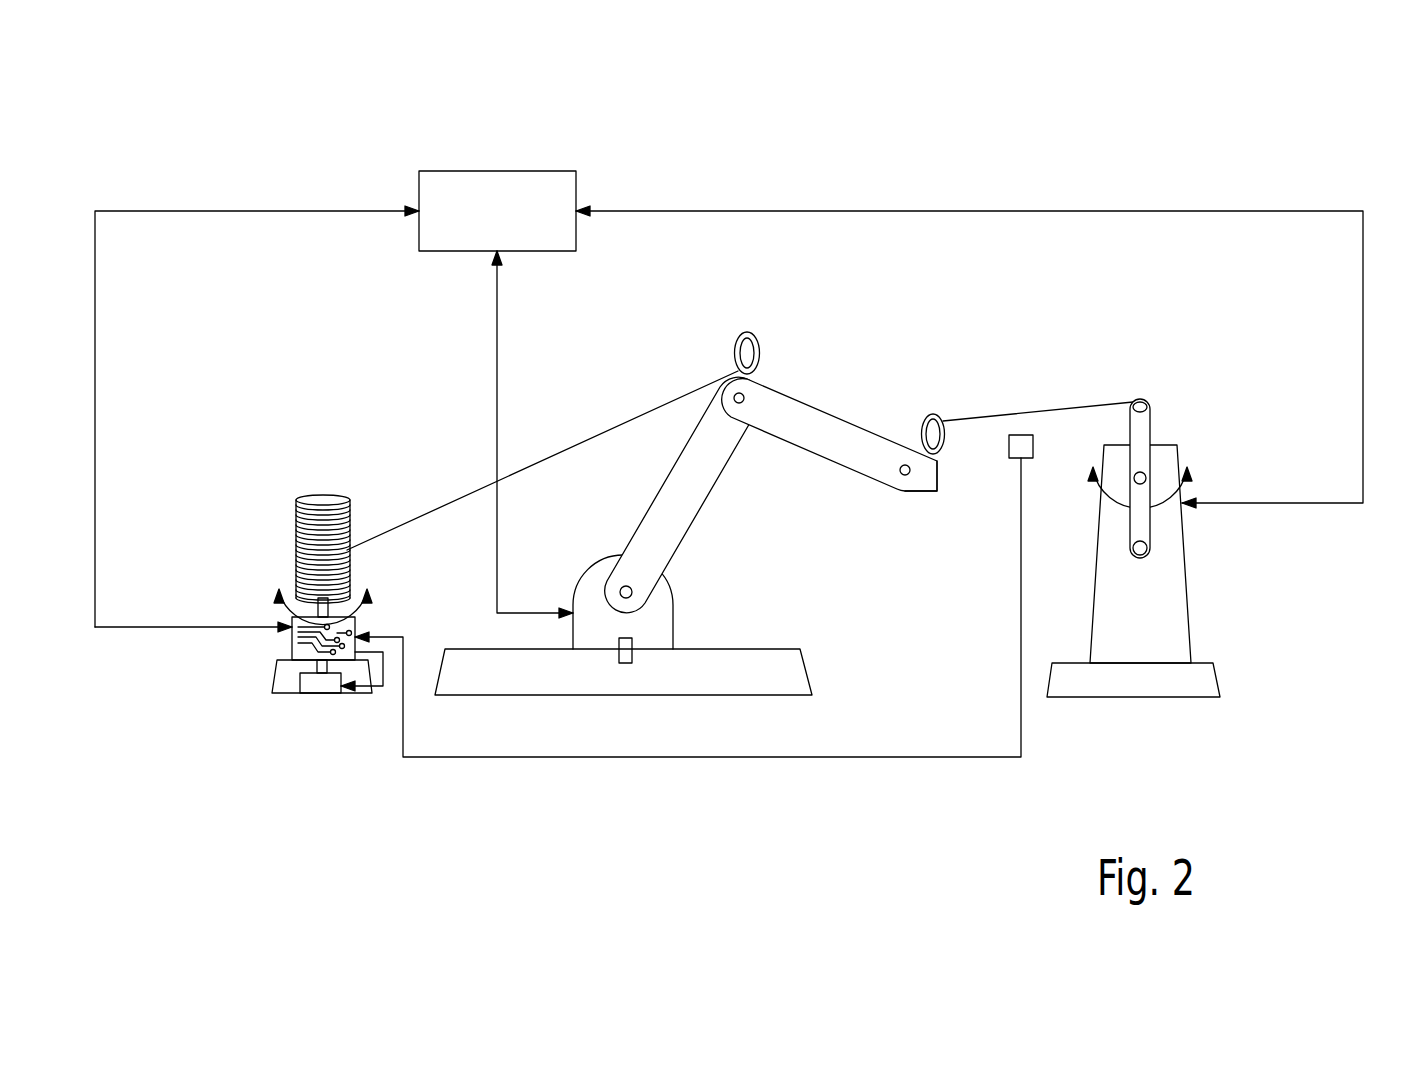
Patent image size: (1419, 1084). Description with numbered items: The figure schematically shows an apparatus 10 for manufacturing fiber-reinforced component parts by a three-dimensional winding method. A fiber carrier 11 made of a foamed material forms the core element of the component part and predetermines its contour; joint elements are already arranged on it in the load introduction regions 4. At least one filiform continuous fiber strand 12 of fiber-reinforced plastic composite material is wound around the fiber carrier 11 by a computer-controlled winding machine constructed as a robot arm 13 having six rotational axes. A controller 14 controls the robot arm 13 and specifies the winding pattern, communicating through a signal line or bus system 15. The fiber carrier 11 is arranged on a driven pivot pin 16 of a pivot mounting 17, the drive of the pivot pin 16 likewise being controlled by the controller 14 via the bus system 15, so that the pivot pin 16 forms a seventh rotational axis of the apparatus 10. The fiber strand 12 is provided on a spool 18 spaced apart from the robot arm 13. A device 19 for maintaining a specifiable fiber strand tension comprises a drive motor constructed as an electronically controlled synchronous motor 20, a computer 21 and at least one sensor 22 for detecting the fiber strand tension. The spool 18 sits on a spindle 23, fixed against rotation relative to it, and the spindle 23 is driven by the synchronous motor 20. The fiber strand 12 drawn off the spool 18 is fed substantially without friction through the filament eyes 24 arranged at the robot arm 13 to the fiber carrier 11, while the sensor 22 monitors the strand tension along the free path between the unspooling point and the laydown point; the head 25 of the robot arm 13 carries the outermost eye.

The load introduction region 4 is at (1140, 398).
The apparatus 10 is at (1226, 540).
The fiber carrier 11 is at (1206, 456).
The fiber strand 12 is at (1048, 407).
The robot arm 13 is at (716, 511).
The controller 14 is at (477, 188).
The bus system 15 is at (97, 291).
The pivot pin 16 is at (1146, 478).
The pivot mounting 17 is at (1174, 513).
The spool 18 is at (322, 500).
The device for maintaining fiber strand tension 19 is at (282, 592).
The synchronous motor 20 is at (320, 683).
The computer 21 is at (292, 638).
The sensor 22 is at (1018, 458).
The spindle 23 is at (318, 612).
The filament eye 24 is at (760, 350).
The head 25 is at (917, 478).